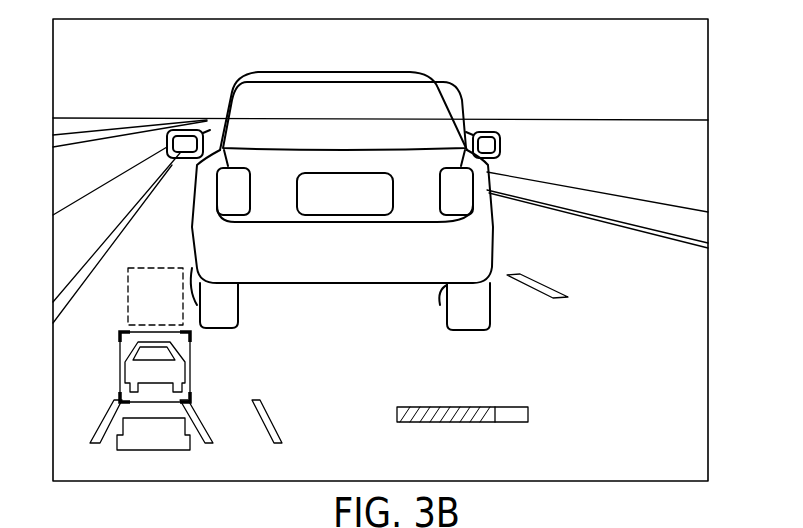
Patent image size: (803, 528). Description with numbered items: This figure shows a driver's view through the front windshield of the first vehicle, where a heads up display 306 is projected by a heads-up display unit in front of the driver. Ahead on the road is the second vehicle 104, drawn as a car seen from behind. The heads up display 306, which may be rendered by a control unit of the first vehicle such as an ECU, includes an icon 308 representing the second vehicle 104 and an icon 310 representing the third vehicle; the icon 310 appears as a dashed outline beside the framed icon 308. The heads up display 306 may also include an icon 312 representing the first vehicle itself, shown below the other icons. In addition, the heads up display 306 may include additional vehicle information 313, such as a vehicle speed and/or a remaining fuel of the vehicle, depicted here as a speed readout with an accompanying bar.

The second vehicle 104 is at (455, 88).
The heads up display 306 is at (80, 366).
The icon representing the second vehicle 308 is at (175, 372).
The icon representing the third vehicle 310 is at (128, 298).
The icon representing the first vehicle 312 is at (185, 443).
The additional vehicle information 313 is at (552, 380).